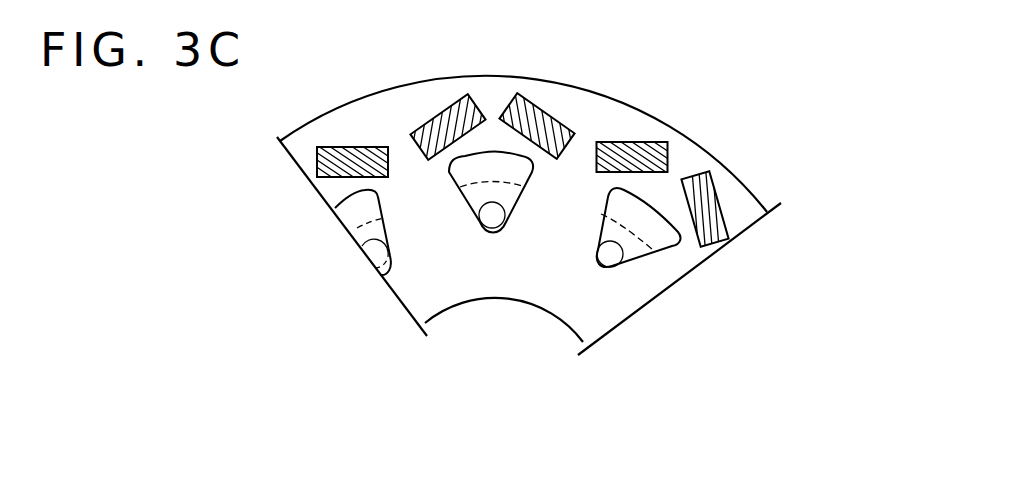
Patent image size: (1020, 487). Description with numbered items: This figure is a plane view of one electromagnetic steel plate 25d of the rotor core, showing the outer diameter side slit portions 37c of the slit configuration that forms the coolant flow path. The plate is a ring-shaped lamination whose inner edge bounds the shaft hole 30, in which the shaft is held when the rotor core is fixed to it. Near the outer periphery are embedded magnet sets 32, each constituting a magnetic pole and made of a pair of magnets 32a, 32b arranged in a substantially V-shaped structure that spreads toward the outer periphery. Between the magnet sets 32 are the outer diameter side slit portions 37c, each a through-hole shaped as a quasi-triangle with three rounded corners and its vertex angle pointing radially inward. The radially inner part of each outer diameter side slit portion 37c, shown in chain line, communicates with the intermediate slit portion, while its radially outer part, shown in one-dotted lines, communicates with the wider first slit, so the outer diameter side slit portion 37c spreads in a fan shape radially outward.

The shaft hole 30 is at (528, 303).
The electromagnetic steel plate 25d is at (700, 140).
The magnet set 32 is at (396, 102).
The magnet 32a is at (350, 147).
The magnet 32b is at (447, 114).
The outer diameter side slit portion 37c is at (375, 246).